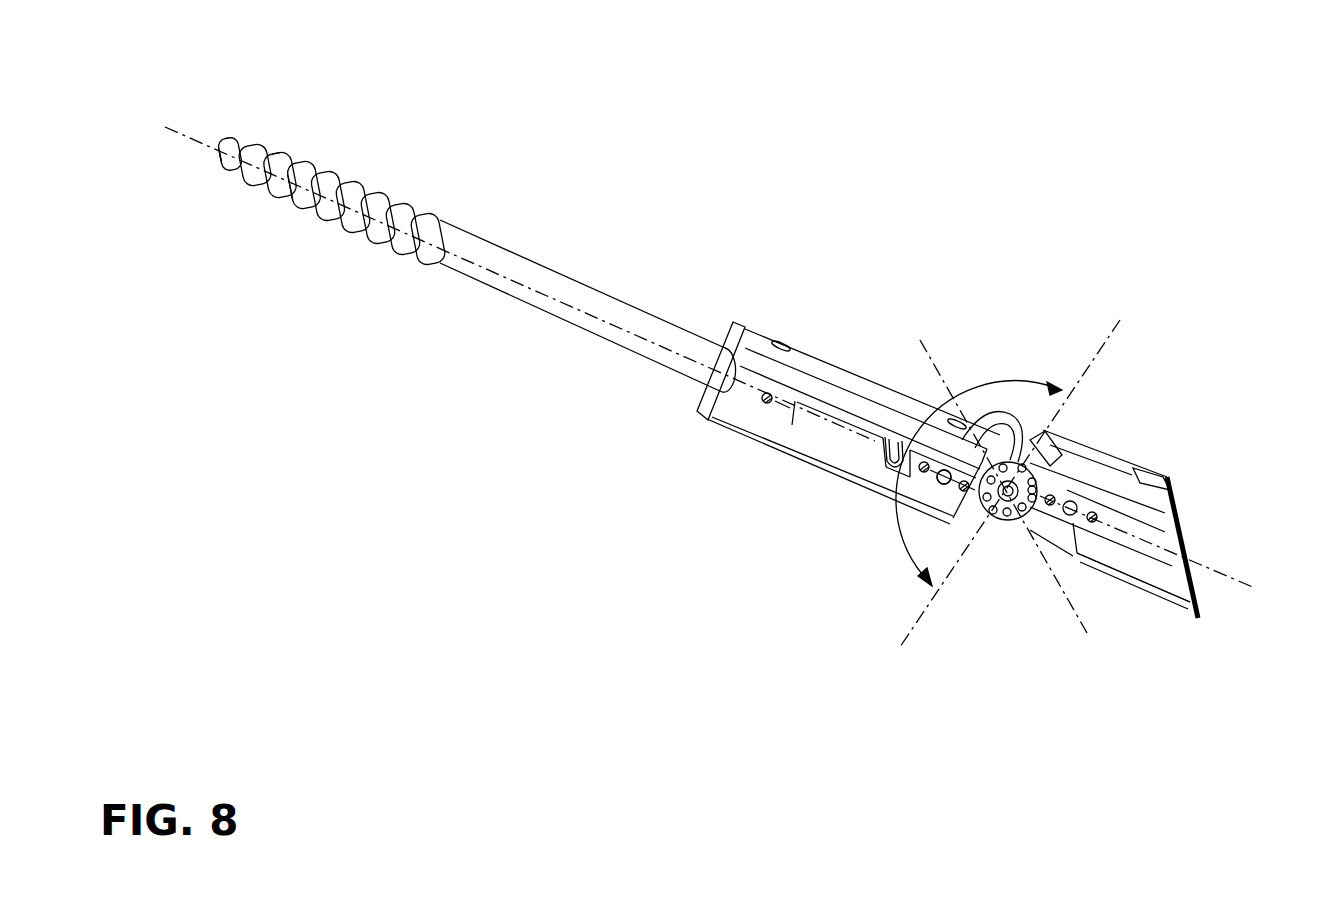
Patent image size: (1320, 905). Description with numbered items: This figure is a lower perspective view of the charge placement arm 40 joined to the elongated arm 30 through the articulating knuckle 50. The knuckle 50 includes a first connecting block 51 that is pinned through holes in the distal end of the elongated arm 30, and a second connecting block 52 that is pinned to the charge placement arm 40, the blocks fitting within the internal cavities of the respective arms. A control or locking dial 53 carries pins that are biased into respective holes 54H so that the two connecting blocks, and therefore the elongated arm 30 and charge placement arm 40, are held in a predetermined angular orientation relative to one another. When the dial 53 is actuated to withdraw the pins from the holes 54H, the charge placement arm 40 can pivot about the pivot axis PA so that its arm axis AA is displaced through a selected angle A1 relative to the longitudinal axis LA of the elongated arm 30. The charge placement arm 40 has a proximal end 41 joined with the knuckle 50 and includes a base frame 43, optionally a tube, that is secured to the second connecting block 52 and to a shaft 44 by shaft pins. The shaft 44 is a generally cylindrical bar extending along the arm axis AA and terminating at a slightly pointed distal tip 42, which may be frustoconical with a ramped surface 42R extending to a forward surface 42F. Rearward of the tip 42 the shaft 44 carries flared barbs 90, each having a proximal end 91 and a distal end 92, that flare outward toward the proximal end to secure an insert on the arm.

The elongated arm 30 is at (1145, 440).
The charge placement arm 40 is at (848, 367).
The proximal end 41 is at (927, 400).
The distal tip 42 is at (224, 145).
The forward surface 42F is at (216, 150).
The ramped surface 42R is at (233, 142).
The base frame 43 is at (748, 330).
The shaft 44 is at (656, 330).
The articulating knuckle 50 is at (1012, 405).
The first connecting block 51 is at (1077, 557).
The second connecting block 52 is at (948, 488).
The locking dial 53 is at (1000, 425).
The holes 54H is at (1038, 488).
The barbs 90 is at (362, 161).
The proximal end 91 is at (296, 156).
The distal end 92 is at (280, 147).
The arm axis AA is at (530, 288).
The angle A1 is at (896, 517).
The pivot axis PA is at (1070, 605).
The longitudinal axis LA is at (1245, 587).